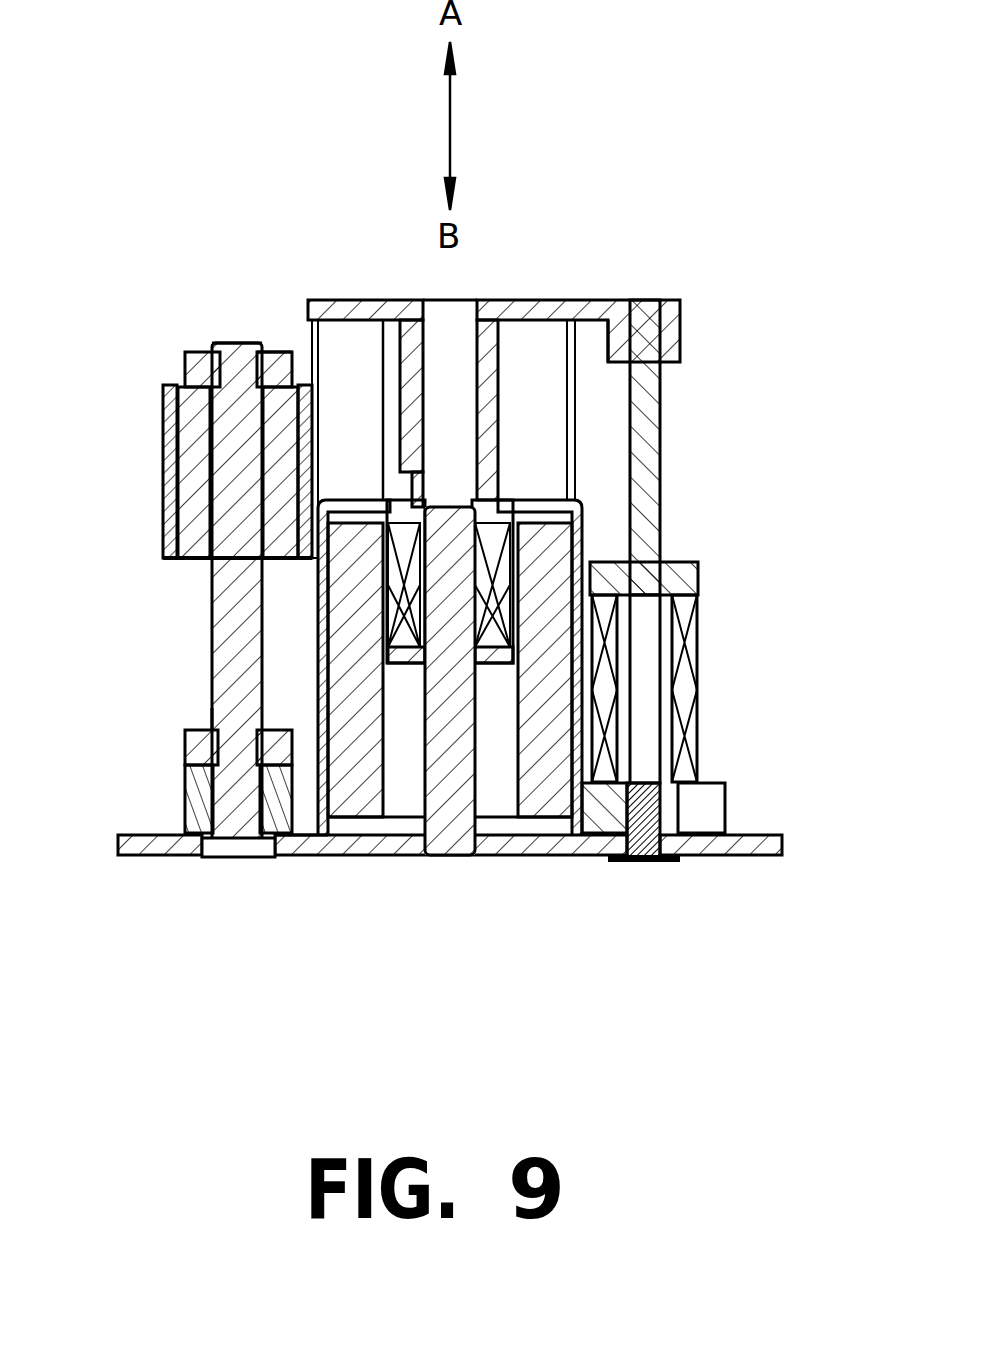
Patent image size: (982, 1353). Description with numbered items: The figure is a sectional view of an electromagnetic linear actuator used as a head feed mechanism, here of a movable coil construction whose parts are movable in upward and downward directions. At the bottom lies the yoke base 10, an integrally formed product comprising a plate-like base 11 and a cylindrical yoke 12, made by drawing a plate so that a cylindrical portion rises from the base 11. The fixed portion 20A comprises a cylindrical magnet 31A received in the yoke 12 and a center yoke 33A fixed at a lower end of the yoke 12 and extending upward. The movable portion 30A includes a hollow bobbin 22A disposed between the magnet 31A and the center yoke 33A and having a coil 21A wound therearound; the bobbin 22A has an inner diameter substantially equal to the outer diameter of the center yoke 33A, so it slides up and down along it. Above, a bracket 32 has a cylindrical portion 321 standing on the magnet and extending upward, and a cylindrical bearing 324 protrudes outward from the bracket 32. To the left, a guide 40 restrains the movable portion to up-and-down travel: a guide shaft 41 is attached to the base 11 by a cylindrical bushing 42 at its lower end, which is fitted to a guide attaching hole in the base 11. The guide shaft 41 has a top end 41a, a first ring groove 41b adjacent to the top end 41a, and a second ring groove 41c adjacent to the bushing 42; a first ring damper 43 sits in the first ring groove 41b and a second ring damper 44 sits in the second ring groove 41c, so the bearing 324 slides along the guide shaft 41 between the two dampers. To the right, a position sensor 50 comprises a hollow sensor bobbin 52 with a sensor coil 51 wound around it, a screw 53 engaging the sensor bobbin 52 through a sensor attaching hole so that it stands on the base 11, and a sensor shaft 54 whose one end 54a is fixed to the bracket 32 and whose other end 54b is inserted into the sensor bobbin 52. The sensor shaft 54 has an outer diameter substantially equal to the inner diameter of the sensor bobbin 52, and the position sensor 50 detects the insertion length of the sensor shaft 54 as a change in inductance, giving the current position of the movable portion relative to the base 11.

The yoke base 10 is at (162, 857).
The base 11 is at (303, 843).
The yoke 12 is at (313, 663).
The fixed portion 20A is at (575, 753).
The coil 21A is at (513, 577).
The bobbin 22A is at (492, 667).
The movable portion 30A is at (396, 349).
The magnet 31A is at (540, 720).
The bracket 32 is at (555, 300).
The cylindrical portion 321 is at (412, 387).
The bearing 324 is at (165, 497).
The center yoke 33A is at (452, 743).
The guide 40 is at (177, 547).
The guide shaft 41 is at (212, 615).
The top end 41a is at (233, 343).
The first ring groove 41b is at (258, 345).
The second ring groove 41c is at (225, 717).
The bushing 42 is at (193, 787).
The first ring damper 43 is at (200, 350).
The second ring damper 44 is at (190, 742).
The position sensor 50 is at (717, 591).
The sensor coil 51 is at (698, 660).
The sensor bobbin 52 is at (697, 570).
The screw 53 is at (668, 860).
The sensor shaft 54 is at (660, 378).
The one end 54a is at (647, 300).
The other end 54b is at (640, 597).